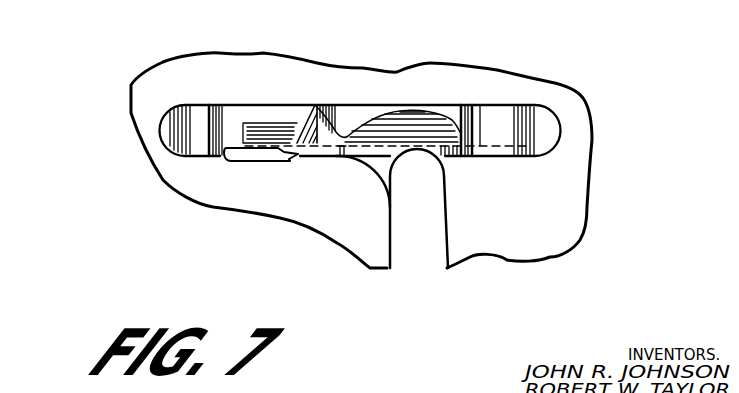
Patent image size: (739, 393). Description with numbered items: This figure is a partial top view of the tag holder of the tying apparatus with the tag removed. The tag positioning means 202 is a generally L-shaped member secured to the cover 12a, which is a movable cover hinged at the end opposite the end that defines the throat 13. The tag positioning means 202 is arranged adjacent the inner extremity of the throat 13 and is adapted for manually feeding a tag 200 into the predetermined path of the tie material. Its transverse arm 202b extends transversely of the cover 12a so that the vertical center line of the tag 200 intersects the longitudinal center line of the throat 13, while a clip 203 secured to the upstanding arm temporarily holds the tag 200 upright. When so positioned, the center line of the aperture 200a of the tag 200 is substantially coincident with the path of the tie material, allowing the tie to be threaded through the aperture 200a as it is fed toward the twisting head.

The cover 12a is at (583, 207).
The throat 13 is at (416, 231).
The tag 200 is at (493, 146).
The aperture 200a is at (261, 112).
The tag positioning means 202 is at (207, 122).
The transverse arm 202b is at (547, 126).
The clip 203 is at (303, 160).